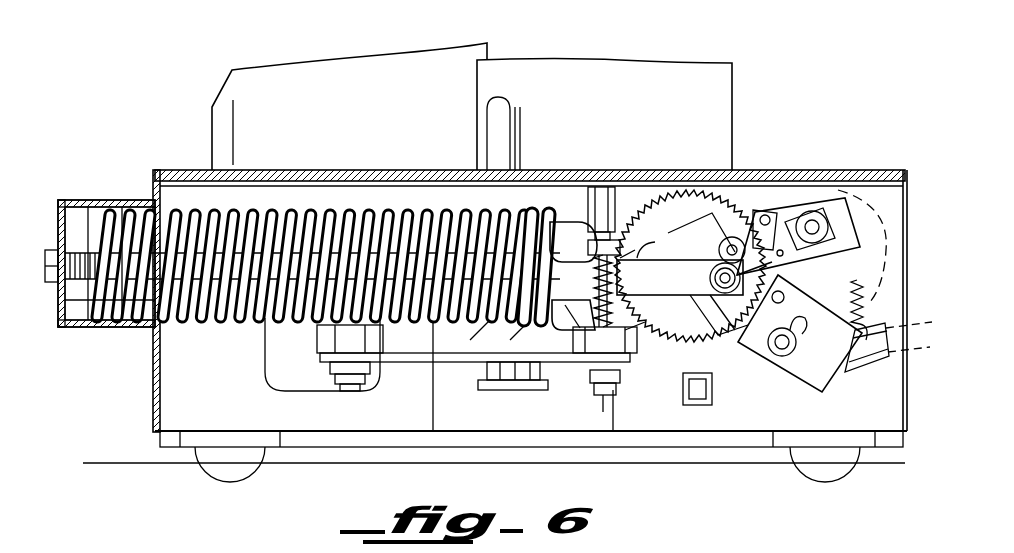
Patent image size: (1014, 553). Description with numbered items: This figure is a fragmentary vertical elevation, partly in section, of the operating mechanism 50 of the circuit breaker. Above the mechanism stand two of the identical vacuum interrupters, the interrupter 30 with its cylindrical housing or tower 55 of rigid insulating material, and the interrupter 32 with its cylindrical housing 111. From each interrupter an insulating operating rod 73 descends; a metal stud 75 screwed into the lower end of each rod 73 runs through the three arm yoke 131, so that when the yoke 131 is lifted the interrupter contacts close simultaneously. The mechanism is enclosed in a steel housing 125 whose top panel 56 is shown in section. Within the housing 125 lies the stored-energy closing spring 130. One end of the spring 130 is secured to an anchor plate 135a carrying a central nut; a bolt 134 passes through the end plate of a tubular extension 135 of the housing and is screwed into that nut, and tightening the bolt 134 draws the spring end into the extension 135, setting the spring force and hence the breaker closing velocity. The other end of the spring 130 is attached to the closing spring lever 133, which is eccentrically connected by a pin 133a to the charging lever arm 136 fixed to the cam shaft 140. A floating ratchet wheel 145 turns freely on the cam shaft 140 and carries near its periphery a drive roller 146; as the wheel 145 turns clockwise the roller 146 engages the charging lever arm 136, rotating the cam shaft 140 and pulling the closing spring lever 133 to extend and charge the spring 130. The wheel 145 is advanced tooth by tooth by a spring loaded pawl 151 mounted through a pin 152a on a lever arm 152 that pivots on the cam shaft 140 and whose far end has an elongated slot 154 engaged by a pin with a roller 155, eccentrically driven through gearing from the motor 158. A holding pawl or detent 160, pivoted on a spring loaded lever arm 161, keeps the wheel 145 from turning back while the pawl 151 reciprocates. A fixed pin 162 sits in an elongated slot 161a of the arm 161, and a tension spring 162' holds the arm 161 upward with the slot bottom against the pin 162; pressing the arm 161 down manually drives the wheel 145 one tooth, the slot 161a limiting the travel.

The interrupter 30 is at (298, 58).
The interrupter 32 is at (738, 98).
The operating mechanism 50 is at (183, 143).
The cylindrical housing or tower 55 is at (358, 110).
The top panel 56 is at (432, 170).
The operating rod 73 is at (604, 186).
The metal stud 75 is at (602, 335).
The cylindrical housing 111 is at (638, 105).
The housing 125 is at (150, 384).
The stored-energy closing spring 130 is at (247, 316).
The three arm yoke (operating arm) 131 is at (463, 367).
The closing spring lever 133 is at (565, 250).
The pin 133a is at (692, 330).
The bolt 134 is at (70, 205).
The tubular extension 135 is at (102, 330).
The anchor plate 135a is at (97, 215).
The charging lever arm 136 is at (680, 254).
The cam shaft 140 is at (691, 315).
The floating ratchet wheel 145 is at (652, 194).
The drive roller 146 is at (704, 232).
The spring loaded pawl 151 is at (741, 208).
The lever arm 152 is at (821, 208).
The pin 152a is at (758, 203).
The elongated slot 154 is at (872, 268).
The pin with a roller 155 is at (790, 275).
The motor 158 is at (888, 202).
The holding pawl or detent 160 is at (774, 305).
The lever arm 161 is at (830, 386).
The elongated slot 161a is at (800, 358).
The pin 162 is at (757, 374).
The tension spring 162' is at (891, 359).